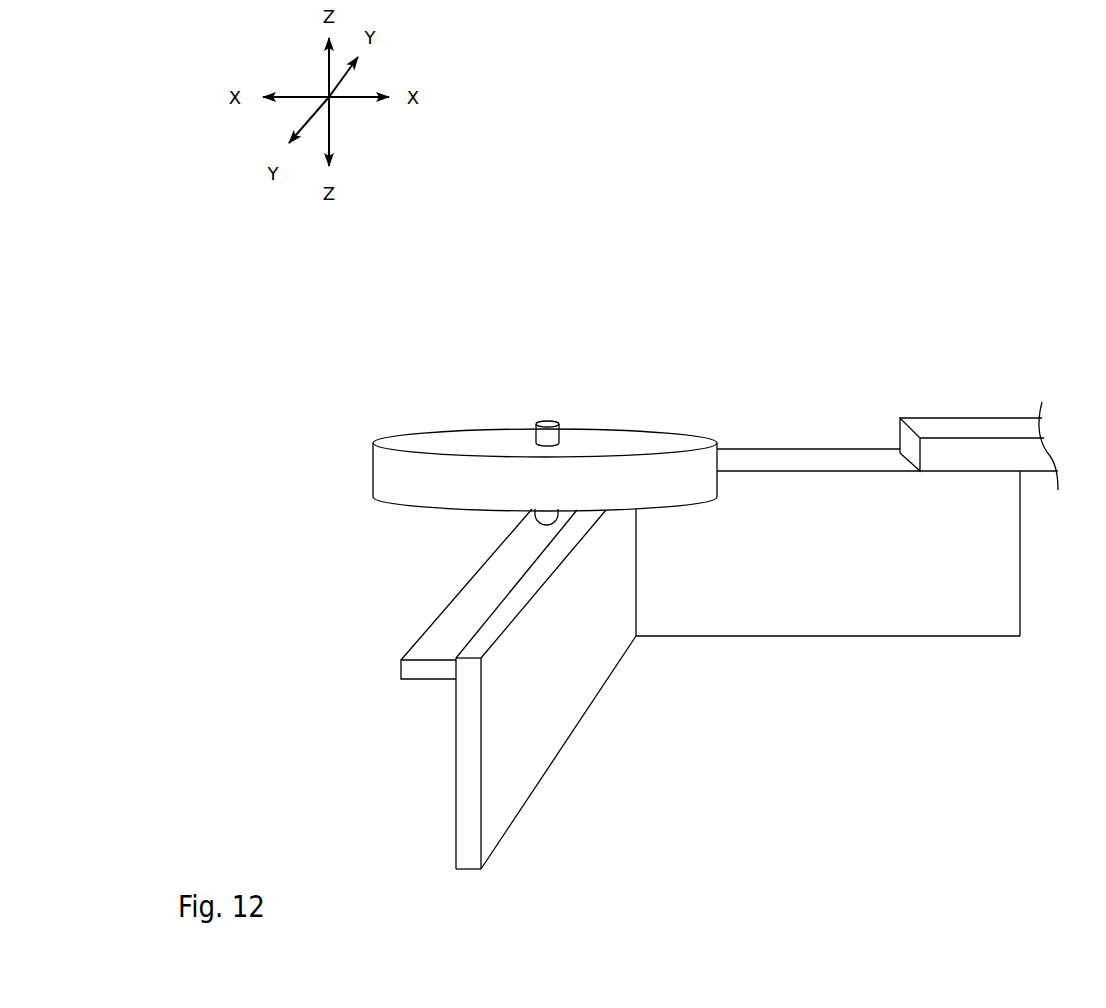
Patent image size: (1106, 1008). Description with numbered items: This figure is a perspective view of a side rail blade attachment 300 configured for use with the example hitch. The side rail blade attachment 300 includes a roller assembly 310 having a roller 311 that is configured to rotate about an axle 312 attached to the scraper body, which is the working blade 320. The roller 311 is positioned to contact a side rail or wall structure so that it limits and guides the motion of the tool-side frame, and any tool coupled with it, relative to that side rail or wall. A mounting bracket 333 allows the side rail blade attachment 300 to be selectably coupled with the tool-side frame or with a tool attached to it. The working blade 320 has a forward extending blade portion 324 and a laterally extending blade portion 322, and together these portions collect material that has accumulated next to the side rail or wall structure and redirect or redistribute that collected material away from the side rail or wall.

The side rail blade attachment 300 is at (280, 380).
The roller assembly 310 is at (545, 425).
The roller 311 is at (445, 443).
The axle 312 is at (548, 422).
The working blade 320 is at (731, 602).
The laterally extending blade portion 322 is at (902, 610).
The forward extending blade portion 324 is at (508, 748).
The mounting bracket 333 is at (998, 428).